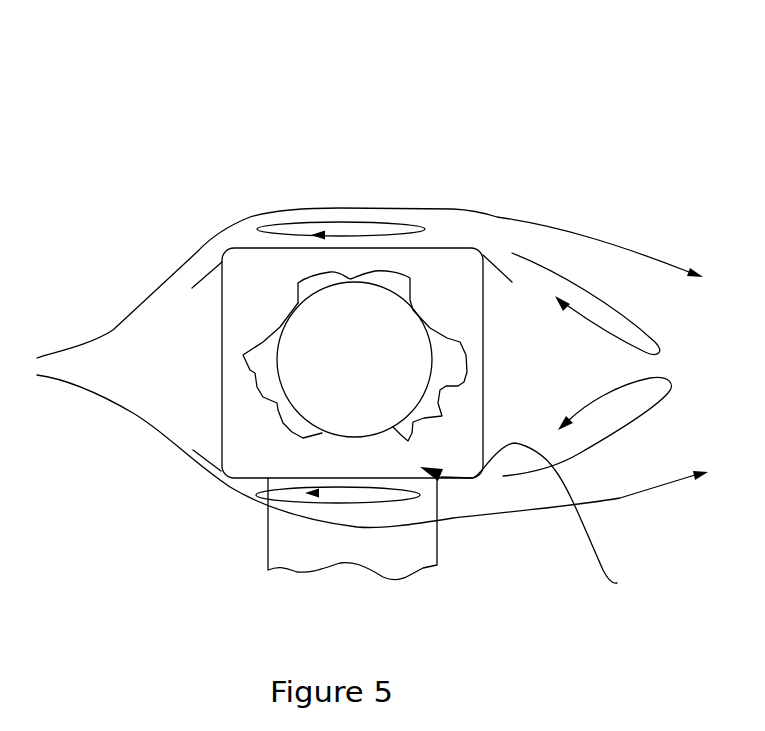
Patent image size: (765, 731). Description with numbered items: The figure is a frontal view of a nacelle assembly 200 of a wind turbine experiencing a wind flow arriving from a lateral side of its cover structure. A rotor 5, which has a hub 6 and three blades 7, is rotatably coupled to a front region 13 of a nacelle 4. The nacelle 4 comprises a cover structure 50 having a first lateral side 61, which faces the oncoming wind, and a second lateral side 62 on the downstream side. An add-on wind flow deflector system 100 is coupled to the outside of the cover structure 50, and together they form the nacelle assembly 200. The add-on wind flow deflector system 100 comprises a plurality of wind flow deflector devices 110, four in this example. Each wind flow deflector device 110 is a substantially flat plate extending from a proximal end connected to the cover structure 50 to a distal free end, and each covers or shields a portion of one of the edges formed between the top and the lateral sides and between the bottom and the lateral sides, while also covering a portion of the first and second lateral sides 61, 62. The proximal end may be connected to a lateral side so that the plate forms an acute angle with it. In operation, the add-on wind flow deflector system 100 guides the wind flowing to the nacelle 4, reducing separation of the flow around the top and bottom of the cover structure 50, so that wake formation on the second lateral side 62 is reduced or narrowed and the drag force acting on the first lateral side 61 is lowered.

The nacelle assembly 200 is at (402, 104).
The add-on wind flow deflector system 100 is at (181, 240).
The wind flow deflector devices 110 is at (215, 276).
The cover structure 50 is at (443, 247).
The second lateral side 62 is at (485, 302).
The first lateral side 61 is at (220, 375).
The blades 7 is at (257, 373).
The hub 6 is at (320, 397).
The rotor 5 is at (330, 497).
The front region 13 is at (457, 480).
The nacelle 4 is at (520, 484).